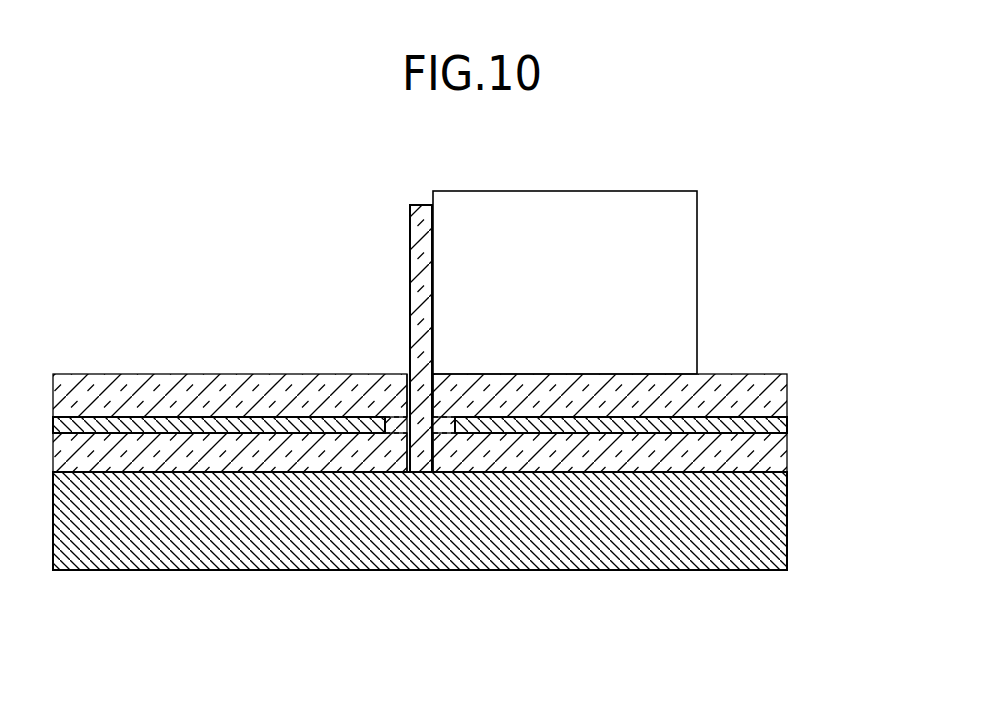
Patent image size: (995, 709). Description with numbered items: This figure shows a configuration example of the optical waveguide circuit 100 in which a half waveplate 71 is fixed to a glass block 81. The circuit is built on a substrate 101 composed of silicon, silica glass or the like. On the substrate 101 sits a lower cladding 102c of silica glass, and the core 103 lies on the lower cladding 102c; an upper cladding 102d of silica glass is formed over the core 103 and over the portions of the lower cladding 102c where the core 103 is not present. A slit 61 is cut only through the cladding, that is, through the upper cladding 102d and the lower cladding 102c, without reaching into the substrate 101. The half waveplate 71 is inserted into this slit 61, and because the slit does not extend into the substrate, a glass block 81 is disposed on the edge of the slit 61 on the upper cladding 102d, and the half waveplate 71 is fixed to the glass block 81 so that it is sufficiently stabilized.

The optical waveguide circuit 100 is at (204, 219).
The substrate 101 is at (777, 515).
The lower cladding 102c is at (775, 457).
The upper cladding 102d is at (775, 380).
The core 103 is at (778, 423).
The slit 61 is at (400, 364).
The half waveplate 71 is at (415, 243).
The glass block 81 is at (680, 255).